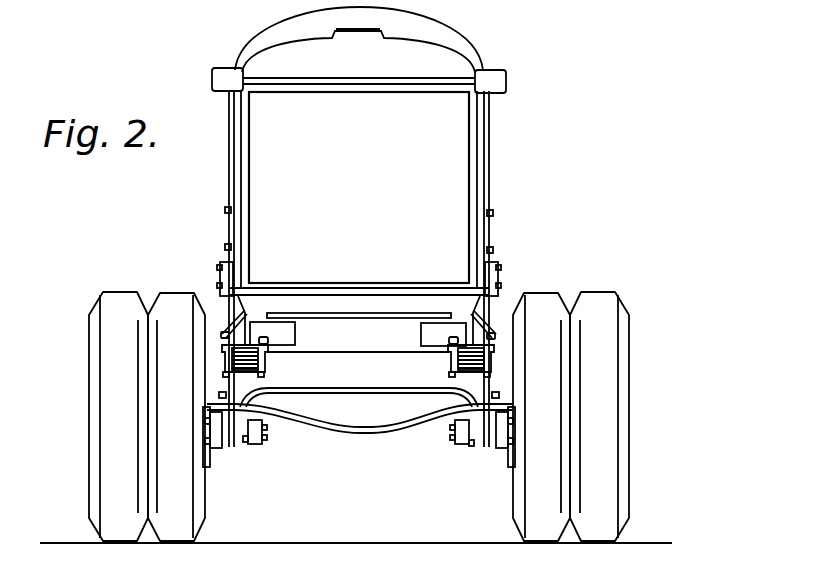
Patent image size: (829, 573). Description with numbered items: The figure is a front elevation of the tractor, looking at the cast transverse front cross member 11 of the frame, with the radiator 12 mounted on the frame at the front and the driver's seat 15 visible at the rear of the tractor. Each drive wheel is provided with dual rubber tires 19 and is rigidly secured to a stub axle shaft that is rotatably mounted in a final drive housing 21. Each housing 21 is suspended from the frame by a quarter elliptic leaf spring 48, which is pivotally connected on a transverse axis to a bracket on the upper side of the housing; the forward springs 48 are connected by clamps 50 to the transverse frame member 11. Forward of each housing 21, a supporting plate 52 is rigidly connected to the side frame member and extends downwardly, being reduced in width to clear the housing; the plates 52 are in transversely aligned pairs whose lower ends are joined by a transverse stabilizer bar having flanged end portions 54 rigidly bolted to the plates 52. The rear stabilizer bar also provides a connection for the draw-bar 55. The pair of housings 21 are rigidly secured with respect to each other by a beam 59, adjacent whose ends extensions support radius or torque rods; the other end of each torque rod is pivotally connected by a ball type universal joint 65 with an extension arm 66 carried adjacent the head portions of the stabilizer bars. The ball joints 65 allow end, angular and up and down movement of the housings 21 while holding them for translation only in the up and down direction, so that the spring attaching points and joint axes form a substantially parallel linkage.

The transverse front cross member 11 is at (362, 341).
The radiator 12 is at (462, 66).
The driver's seat 15 is at (455, 35).
The dual rubber tires 19 is at (113, 407).
The final drive housing 21 is at (212, 373).
The quarter elliptic leaf spring 48 is at (267, 357).
The clamps 50 is at (233, 356).
The plate 52 is at (222, 296).
The flanged end portions 54 is at (254, 504).
The draw-bar 55 is at (364, 428).
The beam 59 is at (333, 400).
The ball type universal joint 65 is at (258, 443).
The extension arm 66 is at (248, 437).